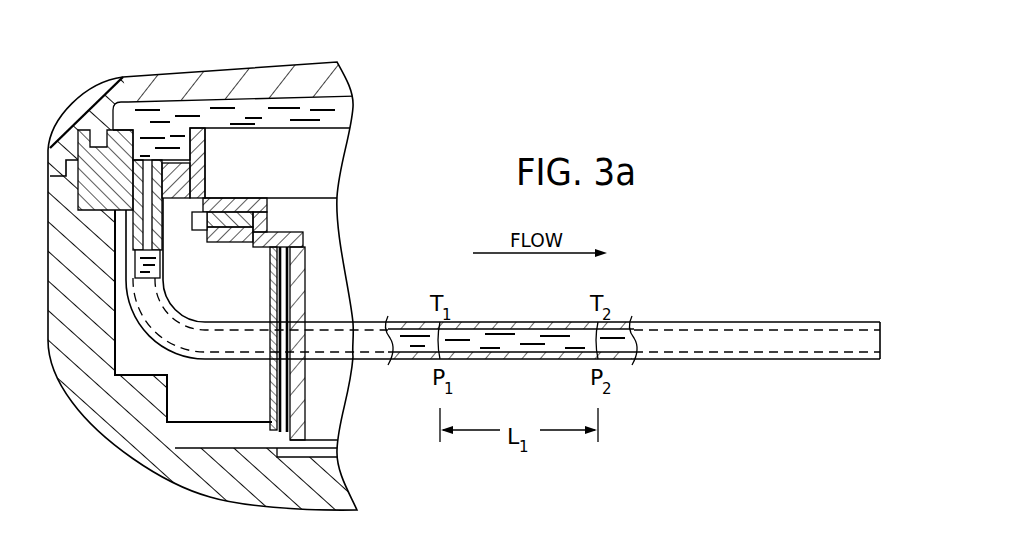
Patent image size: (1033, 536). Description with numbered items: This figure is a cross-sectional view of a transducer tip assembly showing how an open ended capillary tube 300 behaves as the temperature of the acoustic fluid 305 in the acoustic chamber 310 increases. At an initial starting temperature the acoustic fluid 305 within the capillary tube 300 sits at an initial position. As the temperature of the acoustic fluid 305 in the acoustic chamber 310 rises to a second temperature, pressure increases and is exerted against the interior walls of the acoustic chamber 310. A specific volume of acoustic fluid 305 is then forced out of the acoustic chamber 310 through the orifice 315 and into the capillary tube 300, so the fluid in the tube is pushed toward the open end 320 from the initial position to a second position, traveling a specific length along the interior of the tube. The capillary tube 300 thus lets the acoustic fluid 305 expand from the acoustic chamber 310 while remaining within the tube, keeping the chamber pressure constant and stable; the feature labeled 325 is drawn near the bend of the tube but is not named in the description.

The capillary tube 300 is at (705, 322).
The acoustic fluid 305 is at (203, 118).
The acoustic chamber 310 is at (343, 103).
The orifice 315 is at (147, 158).
The open end 320 is at (878, 343).
The sensor 325 is at (163, 232).